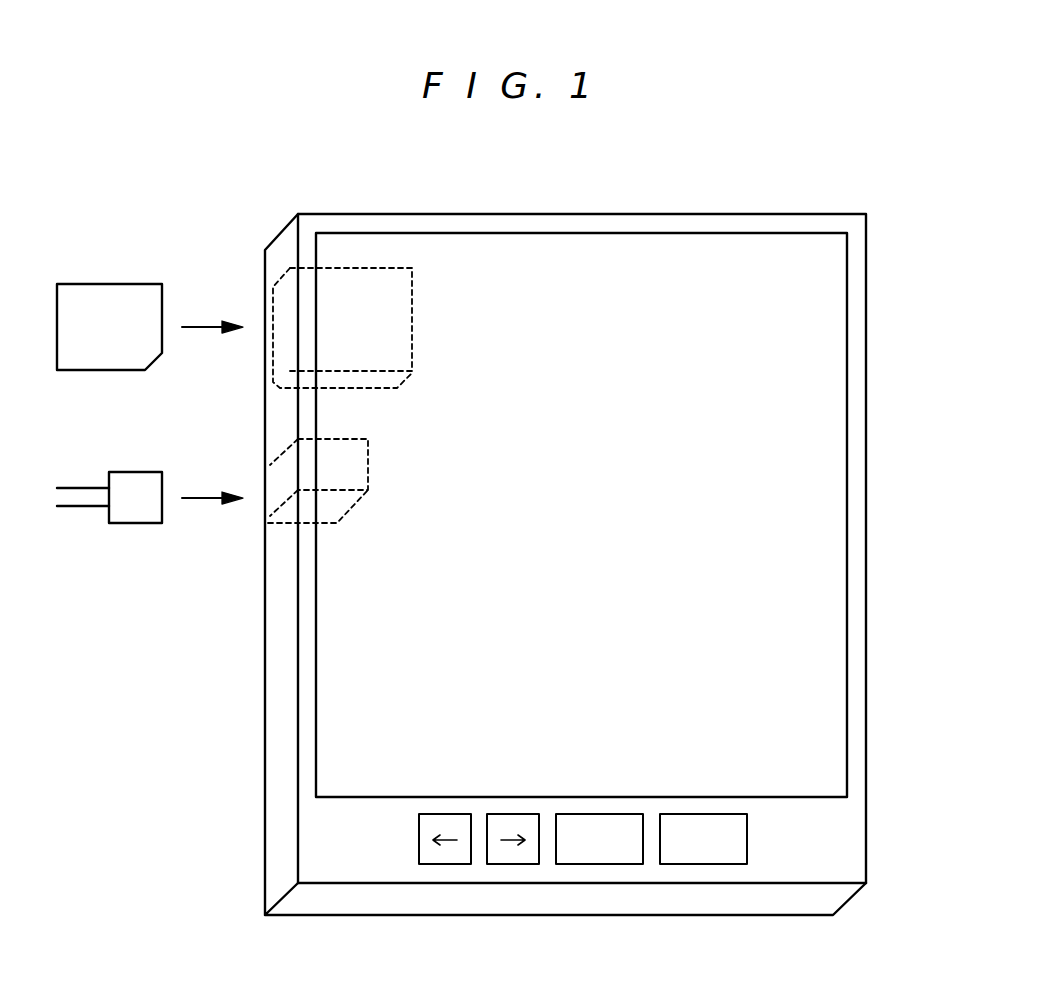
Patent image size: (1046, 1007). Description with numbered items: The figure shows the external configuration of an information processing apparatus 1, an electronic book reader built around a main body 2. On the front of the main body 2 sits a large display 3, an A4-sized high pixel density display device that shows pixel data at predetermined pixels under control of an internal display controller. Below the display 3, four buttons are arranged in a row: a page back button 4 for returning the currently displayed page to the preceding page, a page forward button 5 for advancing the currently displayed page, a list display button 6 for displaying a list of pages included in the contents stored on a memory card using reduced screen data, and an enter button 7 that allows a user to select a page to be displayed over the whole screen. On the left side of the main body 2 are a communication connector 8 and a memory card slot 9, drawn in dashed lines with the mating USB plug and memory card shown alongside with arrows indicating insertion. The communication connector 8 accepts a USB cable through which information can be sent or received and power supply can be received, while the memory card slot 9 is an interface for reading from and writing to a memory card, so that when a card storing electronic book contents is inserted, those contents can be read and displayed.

The information processing apparatus 1 is at (219, 763).
The main body 2 is at (842, 844).
The display 3 is at (817, 300).
The page back button 4 is at (433, 864).
The page forward button 5 is at (503, 864).
The list display button 6 is at (571, 864).
The enter button 7 is at (675, 864).
The communication connector 8 is at (270, 500).
The memory card slot 9 is at (282, 348).